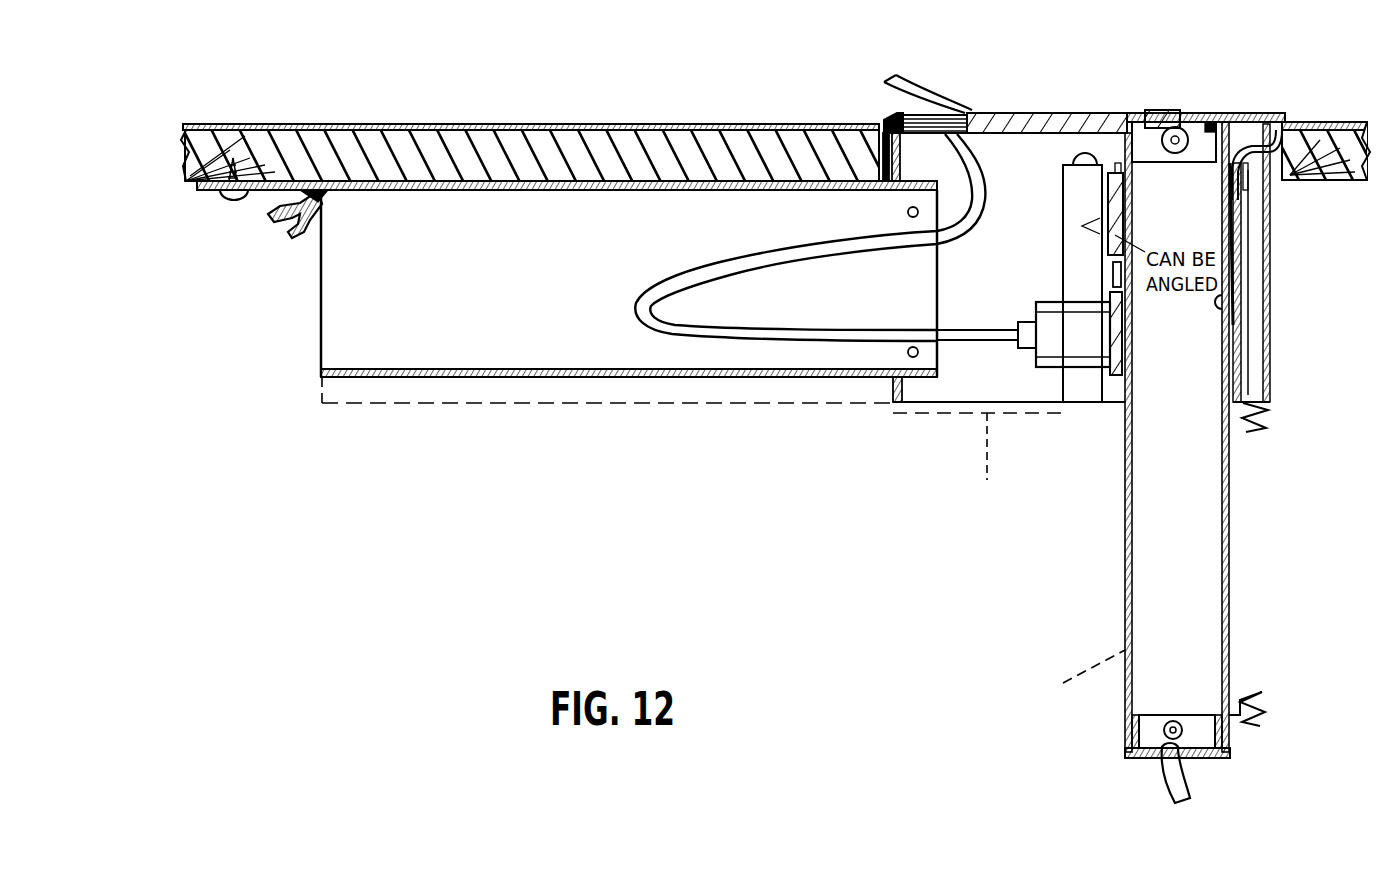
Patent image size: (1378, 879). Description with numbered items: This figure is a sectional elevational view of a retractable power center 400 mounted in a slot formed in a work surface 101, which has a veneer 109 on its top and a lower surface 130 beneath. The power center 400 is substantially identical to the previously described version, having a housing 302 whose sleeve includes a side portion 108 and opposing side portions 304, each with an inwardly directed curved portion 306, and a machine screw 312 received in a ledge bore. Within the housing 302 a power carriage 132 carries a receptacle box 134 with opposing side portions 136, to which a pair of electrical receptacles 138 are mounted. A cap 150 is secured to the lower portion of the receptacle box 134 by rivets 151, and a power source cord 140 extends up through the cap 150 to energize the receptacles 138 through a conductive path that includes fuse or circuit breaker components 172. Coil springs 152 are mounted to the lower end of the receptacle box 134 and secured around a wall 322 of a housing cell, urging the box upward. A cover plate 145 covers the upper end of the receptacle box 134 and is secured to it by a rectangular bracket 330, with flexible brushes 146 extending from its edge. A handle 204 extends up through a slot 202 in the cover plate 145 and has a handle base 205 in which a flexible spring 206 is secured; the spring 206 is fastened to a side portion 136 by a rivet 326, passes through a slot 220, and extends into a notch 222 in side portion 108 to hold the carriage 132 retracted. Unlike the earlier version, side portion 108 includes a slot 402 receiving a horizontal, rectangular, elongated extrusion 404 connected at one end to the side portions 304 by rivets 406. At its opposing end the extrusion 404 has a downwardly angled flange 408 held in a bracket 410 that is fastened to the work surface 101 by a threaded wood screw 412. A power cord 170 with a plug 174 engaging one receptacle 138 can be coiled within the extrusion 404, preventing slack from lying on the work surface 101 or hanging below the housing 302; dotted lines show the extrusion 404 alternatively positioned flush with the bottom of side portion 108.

The work surface 101 is at (182, 122).
The veneer 109 is at (570, 124).
The lower surface 130 is at (187, 192).
The threaded wood screw 412 is at (230, 197).
The bracket 410 is at (288, 230).
The downwardly angled flange 408 is at (320, 204).
The slot 402 is at (900, 290).
The extrusion 404 is at (475, 398).
The rivets 406 is at (907, 212).
The housing 302 is at (905, 404).
The side portions 304 is at (1002, 380).
The power center 400 is at (938, 470).
The side portion 108 is at (893, 392).
The power cord 170 is at (967, 330).
The plug 174 is at (1050, 345).
The electrical receptacles 138 is at (1115, 190).
The fuse or circuit breaker components 172 is at (1113, 272).
The curved portion 306 is at (1063, 232).
The machine screw 312 is at (1075, 160).
The cover plate 145 is at (1010, 113).
The flexible brushes 146 is at (952, 113).
The side portions 136 is at (1124, 508).
The power carriage 132 is at (1085, 595).
The receptacle box 134 is at (1128, 748).
The cap 150 is at (1190, 715).
The rivets 151 is at (1168, 720).
The power source cord 140 is at (1165, 790).
The coil springs 152 is at (1268, 416).
The handle base 205 is at (1160, 165).
The handle 204 is at (1180, 113).
The slot 202 is at (1155, 113).
The bracket 330 is at (1200, 165).
The slot 220 is at (1235, 125).
The flexible spring 206 is at (1288, 122).
The notch 222 is at (1295, 172).
The wall 322 is at (1255, 240).
The rivet 326 is at (1217, 308).